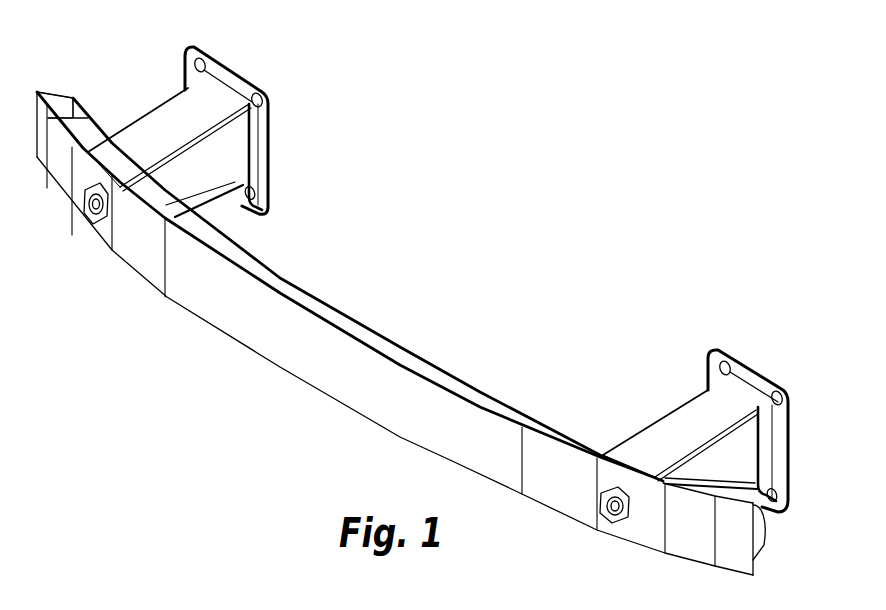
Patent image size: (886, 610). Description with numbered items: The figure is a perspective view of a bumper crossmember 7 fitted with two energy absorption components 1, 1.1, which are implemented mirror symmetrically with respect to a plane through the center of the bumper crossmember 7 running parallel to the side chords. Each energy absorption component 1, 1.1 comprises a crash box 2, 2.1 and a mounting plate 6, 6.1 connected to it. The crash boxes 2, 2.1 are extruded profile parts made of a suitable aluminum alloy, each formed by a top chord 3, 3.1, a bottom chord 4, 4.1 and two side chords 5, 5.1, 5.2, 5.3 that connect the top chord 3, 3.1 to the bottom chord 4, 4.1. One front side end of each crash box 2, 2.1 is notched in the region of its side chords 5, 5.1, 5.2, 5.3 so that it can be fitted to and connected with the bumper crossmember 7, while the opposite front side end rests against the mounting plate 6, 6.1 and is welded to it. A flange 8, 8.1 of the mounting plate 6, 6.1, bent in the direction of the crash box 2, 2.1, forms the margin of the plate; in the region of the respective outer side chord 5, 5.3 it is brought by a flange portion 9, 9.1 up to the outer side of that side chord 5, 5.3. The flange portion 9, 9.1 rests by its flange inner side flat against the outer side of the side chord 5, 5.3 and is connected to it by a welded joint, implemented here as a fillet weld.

The energy absorption component 1 is at (698, 385).
The energy absorption component 1.1 is at (270, 119).
The crash box 2 is at (698, 398).
The crash box 2.1 is at (107, 155).
The top chord 3 is at (692, 443).
The top chord 3.1 is at (177, 146).
The bottom chord 4 is at (793, 497).
The bottom chord 4.1 is at (214, 198).
The side chord 5 is at (732, 473).
The side chord 5.1 is at (617, 443).
The side chord 5.2 is at (220, 185).
The side chord 5.3 is at (130, 126).
The mounting plate 6 is at (765, 398).
The mounting plate 6.1 is at (237, 119).
The bumper crossmember 7 is at (282, 345).
The flange 8 is at (727, 352).
The flange 8.1 is at (203, 57).
The flange portion 9 is at (766, 457).
The flange portion 9.1 is at (186, 89).